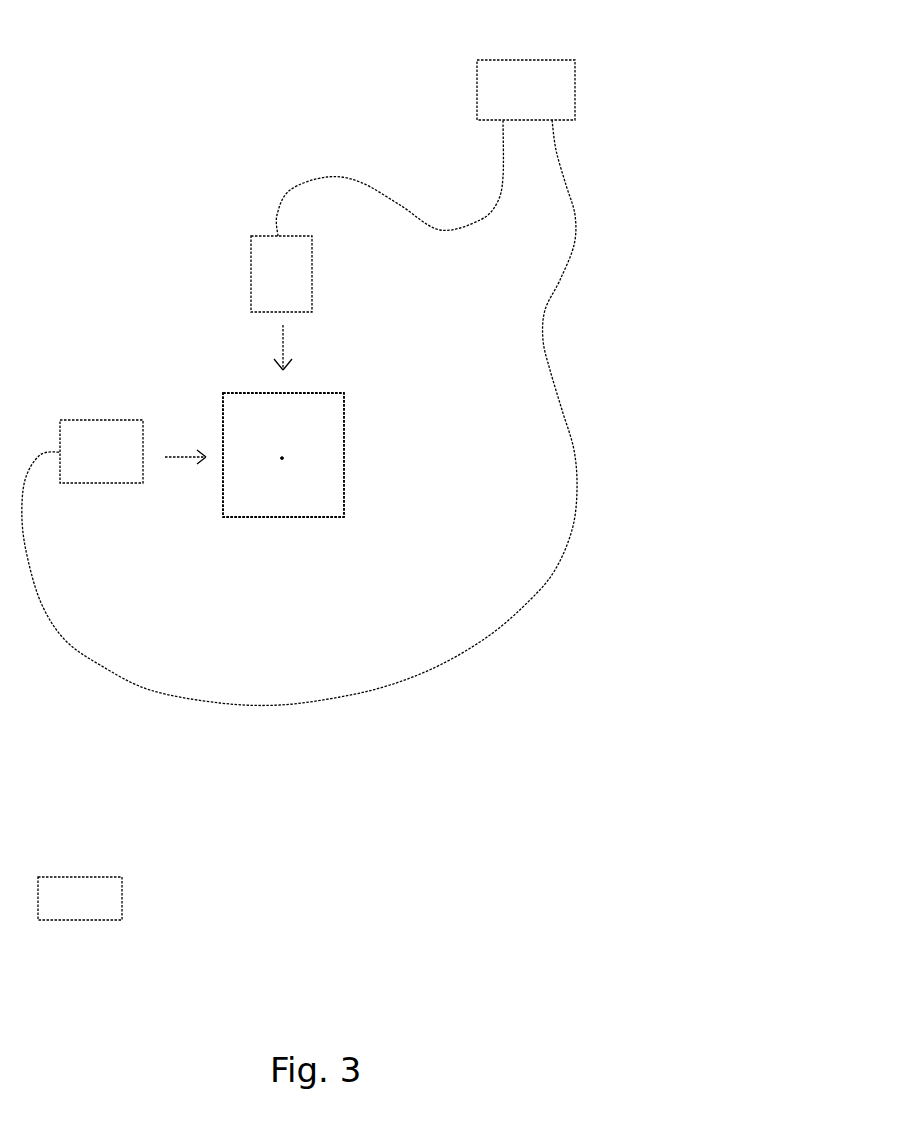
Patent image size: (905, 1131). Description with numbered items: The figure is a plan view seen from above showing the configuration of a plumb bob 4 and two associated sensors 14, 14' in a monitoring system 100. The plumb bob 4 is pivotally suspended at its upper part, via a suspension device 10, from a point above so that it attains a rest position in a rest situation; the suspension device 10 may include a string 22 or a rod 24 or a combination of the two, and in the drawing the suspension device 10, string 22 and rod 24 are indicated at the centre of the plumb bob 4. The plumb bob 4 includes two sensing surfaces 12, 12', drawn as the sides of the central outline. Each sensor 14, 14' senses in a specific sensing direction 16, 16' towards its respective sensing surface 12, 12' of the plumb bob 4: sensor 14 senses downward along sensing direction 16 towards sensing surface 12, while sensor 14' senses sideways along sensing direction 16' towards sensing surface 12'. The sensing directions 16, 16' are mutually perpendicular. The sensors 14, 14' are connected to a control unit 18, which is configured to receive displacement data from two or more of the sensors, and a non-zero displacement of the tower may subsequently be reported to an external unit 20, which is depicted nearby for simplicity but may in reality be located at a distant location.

The system 100 is at (96, 79).
The control unit 18 is at (522, 78).
The sensor 14 is at (250, 274).
The sensing direction 16 is at (251, 347).
The sensing surface 12 is at (299, 425).
The plumb bob 4 is at (327, 442).
The suspension device 10 is at (282, 458).
The string 22 is at (281, 457).
The rod 24 is at (281, 457).
The sensor 14' is at (101, 425).
The sensing direction 16' is at (180, 423).
The sensing surface 12' is at (246, 479).
The external unit 20 is at (105, 902).